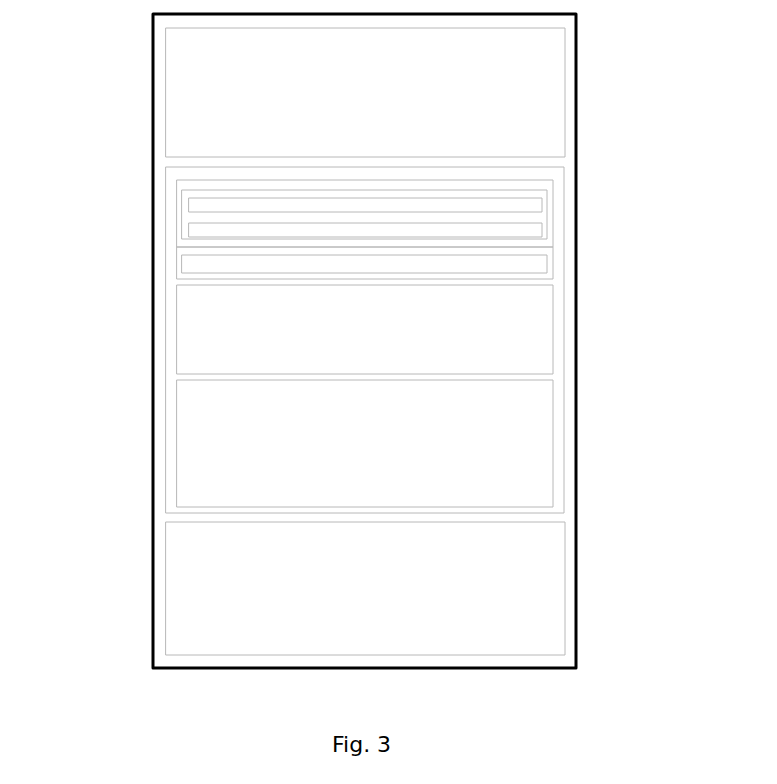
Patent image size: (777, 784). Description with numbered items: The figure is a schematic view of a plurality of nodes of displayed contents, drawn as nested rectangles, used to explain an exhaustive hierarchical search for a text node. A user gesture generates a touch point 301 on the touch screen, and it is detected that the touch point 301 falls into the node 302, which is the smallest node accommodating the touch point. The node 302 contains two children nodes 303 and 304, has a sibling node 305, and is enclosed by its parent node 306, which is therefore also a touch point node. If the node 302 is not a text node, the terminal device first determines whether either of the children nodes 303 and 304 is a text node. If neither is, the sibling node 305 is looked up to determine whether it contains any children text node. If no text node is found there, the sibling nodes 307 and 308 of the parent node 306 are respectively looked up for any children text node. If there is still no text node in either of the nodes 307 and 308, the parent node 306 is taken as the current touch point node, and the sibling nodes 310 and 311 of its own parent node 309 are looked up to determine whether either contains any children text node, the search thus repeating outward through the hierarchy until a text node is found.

The touch point 301 is at (510, 214).
The node 302 is at (533, 191).
The children node 303 is at (188, 208).
The children node 304 is at (188, 235).
The sibling node 305 is at (550, 265).
The parent node 306 is at (182, 254).
The sibling node 307 is at (177, 328).
The sibling node 308 is at (177, 443).
The parent node 309 is at (565, 341).
The sibling node 310 is at (167, 590).
The sibling node 311 is at (166, 91).